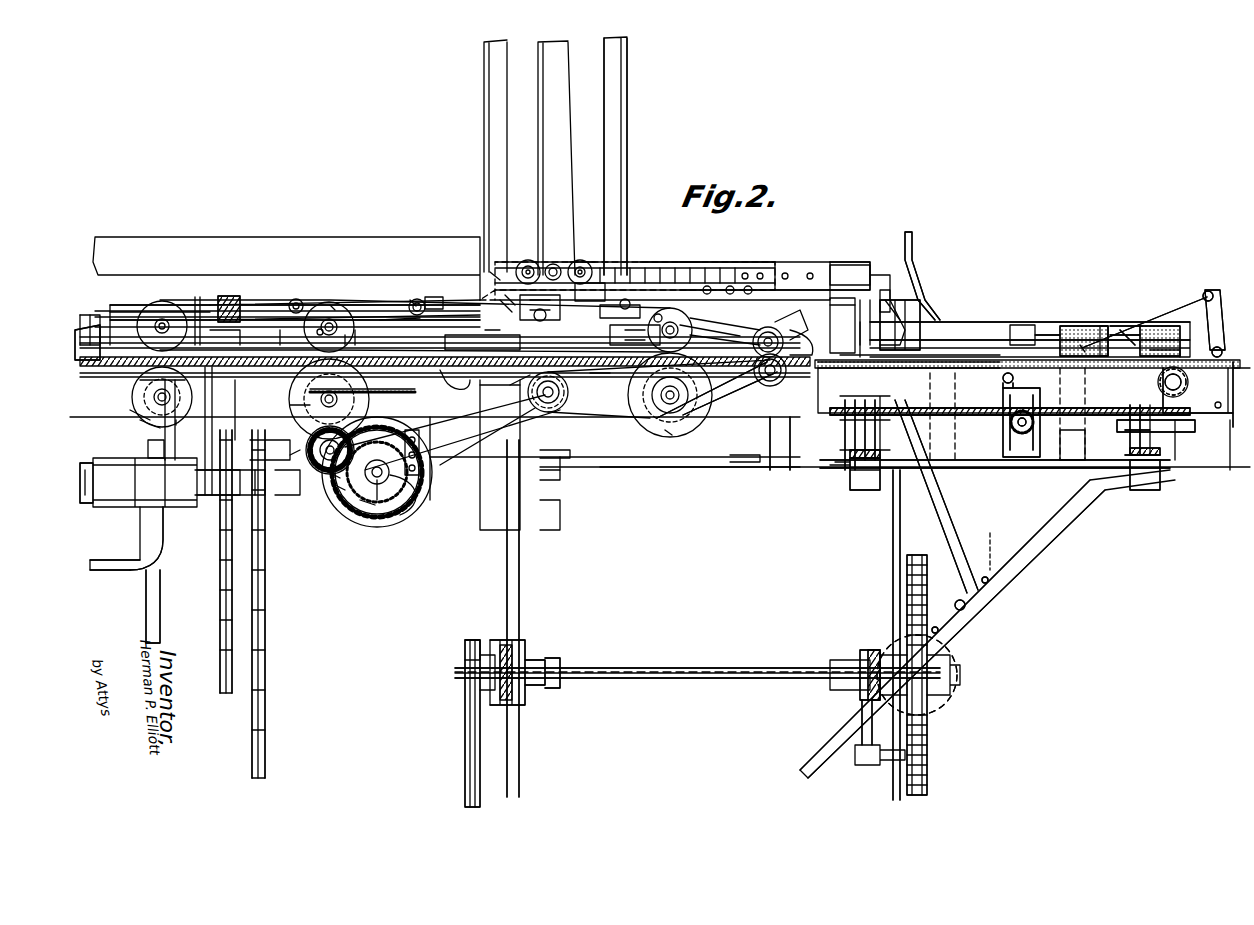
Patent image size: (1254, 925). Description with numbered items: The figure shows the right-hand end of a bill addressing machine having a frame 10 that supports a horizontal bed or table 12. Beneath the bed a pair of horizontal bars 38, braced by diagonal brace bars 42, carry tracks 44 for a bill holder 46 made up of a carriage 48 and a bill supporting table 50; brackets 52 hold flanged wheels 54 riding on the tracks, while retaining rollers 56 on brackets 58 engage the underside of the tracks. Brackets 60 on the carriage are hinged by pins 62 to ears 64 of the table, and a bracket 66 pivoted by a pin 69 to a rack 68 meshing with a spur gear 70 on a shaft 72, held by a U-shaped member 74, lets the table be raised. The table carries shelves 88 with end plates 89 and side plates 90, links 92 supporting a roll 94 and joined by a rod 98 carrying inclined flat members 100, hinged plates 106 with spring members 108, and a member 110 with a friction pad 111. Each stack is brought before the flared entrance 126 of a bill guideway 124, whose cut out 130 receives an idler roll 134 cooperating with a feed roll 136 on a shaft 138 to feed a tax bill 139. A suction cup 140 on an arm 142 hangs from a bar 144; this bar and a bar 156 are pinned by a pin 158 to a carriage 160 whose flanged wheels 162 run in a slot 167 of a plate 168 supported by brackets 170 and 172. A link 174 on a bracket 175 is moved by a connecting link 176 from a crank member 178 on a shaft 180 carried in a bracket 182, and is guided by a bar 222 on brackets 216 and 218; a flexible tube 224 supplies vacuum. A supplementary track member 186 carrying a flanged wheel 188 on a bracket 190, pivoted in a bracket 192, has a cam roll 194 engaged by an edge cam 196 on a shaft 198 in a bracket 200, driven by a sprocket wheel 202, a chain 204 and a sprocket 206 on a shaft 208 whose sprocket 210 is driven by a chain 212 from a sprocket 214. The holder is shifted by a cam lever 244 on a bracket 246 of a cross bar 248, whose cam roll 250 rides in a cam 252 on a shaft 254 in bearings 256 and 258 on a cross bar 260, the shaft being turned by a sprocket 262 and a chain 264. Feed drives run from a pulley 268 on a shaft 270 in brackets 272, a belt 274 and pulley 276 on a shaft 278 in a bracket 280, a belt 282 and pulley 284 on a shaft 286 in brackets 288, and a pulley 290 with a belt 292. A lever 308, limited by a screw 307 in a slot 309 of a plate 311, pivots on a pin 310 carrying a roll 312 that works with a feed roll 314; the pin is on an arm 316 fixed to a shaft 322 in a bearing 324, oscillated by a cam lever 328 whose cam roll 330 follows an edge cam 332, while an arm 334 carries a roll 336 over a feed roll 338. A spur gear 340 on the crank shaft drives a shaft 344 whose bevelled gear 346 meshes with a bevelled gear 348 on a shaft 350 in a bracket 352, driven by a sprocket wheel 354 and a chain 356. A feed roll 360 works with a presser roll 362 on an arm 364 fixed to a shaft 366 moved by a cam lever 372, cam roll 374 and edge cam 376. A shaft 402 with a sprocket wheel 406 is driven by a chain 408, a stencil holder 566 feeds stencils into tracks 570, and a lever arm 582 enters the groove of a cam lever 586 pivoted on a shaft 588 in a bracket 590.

The frame 10 is at (520, 580).
The machine bed or table 12 is at (92, 357).
The horizontal parallel bars 38 is at (1030, 470).
The brace bars 42 is at (1020, 545).
The tracks 44 is at (868, 460).
The bill or sheet holder 46 is at (1232, 425).
The carriage 48 is at (975, 415).
The tax bill supporting table 50 is at (950, 360).
The brackets 52 is at (860, 420).
The flanged wheels 54 is at (848, 432).
The retaining rollers 56 is at (853, 485).
The brackets 58 is at (830, 470).
The brackets 60 is at (1175, 400).
The hinge pins 62 is at (1164, 382).
The ears 64 is at (1182, 376).
The bracket 66 is at (1018, 376).
The rack 68 is at (1003, 400).
The pin 69 is at (1003, 383).
The spur gear 70 is at (1028, 412).
The shaft 72 is at (1030, 422).
The U-shaped frame member 74 is at (1033, 447).
The shelves 88 is at (975, 357).
The vertical end plate 89 is at (1168, 350).
The vertical side plates 90 is at (838, 320).
The links 92 is at (1217, 318).
The roll 94 is at (1220, 351).
The rod 98 is at (1208, 294).
The inclined flat members 100 is at (1180, 312).
The plate 106 is at (1128, 330).
The spring members 108 is at (1095, 335).
The member 110 is at (1075, 335).
The friction pad 111 is at (1058, 335).
The tubular bill guideway 124 is at (410, 303).
The flared entrance 126 is at (805, 345).
The cut out 130 is at (148, 320).
The idler roll 134 is at (790, 320).
The feed roll 136 is at (780, 372).
The shaft 138 is at (778, 380).
The tax bill 139 is at (925, 355).
The suction cup 140 is at (870, 328).
The arm or bracket 142 is at (890, 296).
The bar 144 is at (710, 276).
The bar 156 is at (840, 280).
The pin 158 is at (553, 262).
The carriage 160 is at (580, 262).
The flanged wheels 162 is at (525, 262).
The horizontal slot 167 is at (680, 262).
The plate 168 is at (655, 260).
The bracket 170 is at (740, 455).
The bracket member 172 is at (572, 452).
The link 174 is at (935, 500).
The bracket 175 is at (990, 570).
The connecting link 176 is at (715, 465).
The crank member 178 is at (365, 470).
The shaft 180 is at (370, 490).
The supporting bracket 182 is at (375, 400).
The supplementary track member 186 is at (740, 340).
The flanged wheel 188 is at (615, 312).
The bracket member 190 is at (625, 300).
The bracket 192 is at (605, 380).
The cam roll 194 is at (520, 380).
The edge cam 196 is at (505, 300).
The shaft 198 is at (510, 300).
The bracket 200 is at (478, 328).
The sprocket wheel 202 is at (495, 272).
The sprocket chain 204 is at (570, 384).
The sprocket 206 is at (570, 407).
The shaft 208 is at (555, 405).
The sprocket wheel 210 is at (550, 415).
The chain 212 is at (520, 440).
The sprocket 214 is at (375, 500).
The bracket member 216 is at (770, 455).
The bracket member 218 is at (1080, 470).
The bar 222 is at (1030, 330).
The flexible tube 224 is at (905, 260).
The cam lever 244 is at (893, 548).
The bracket 246 is at (855, 722).
The cross bar 248 is at (870, 648).
The cam roll 250 is at (940, 700).
The cam 252 is at (927, 627).
The shaft 254 is at (720, 680).
The bearing member 256 is at (860, 655).
The bearing 258 is at (535, 660).
The cross bar 260 is at (510, 640).
The sprocket 262 is at (463, 661).
The chain 264 is at (470, 742).
The pulley 268 is at (690, 420).
The shaft 270 is at (692, 412).
The brackets 272 is at (668, 420).
The belt 274 is at (670, 430).
The pulley 276 is at (345, 335).
The shaft 278 is at (355, 330).
The bracket member 280 is at (292, 405).
The belt 282 is at (292, 410).
The pulley 284 is at (150, 415).
The shaft 286 is at (145, 403).
The brackets 288 is at (145, 385).
The pulley 290 is at (176, 420).
The belt 292 is at (135, 415).
The screw 307 is at (615, 292).
The lever 308 is at (765, 335).
The vertical slot 309 is at (545, 300).
The shaft or journal pin 310 is at (690, 318).
The vertical plate 311 is at (648, 333).
The roll 312 is at (690, 330).
The feed roll 314 is at (720, 395).
The arm 316 is at (660, 315).
The shaft 322 is at (410, 300).
The bearing 324 is at (445, 380).
The cam lever 328 is at (398, 320).
The cam roll 330 is at (418, 472).
The edge cam 332 is at (400, 495).
The arm 334 is at (330, 318).
The roll 336 is at (330, 305).
The feed roll 338 is at (320, 330).
The spur gear 340 is at (385, 518).
The shaft 344 is at (335, 476).
The bevelled gear 346 is at (318, 470).
The bevelled gear 348 is at (320, 463).
The shaft 350 is at (282, 455).
The bracket member 352 is at (290, 460).
The sprocket wheel 354 is at (222, 490).
The chain 356 is at (265, 612).
The feed roll 360 is at (150, 450).
The presser roll 362 is at (180, 315).
The arm 364 is at (205, 315).
The shaft 366 is at (290, 300).
The cam lever 372 is at (280, 330).
The cam roll 374 is at (340, 490).
The edge cam 376 is at (368, 505).
The shaft 402 is at (118, 300).
The sprocket wheel 406 is at (232, 296).
The chain 408 is at (220, 665).
The holder 566 is at (615, 183).
The stencil tracks or guideways 570 is at (112, 340).
The lever arm 582 is at (175, 560).
The cam lever 586 is at (160, 625).
The shaft 588 is at (87, 508).
The supporting bracket 590 is at (122, 575).